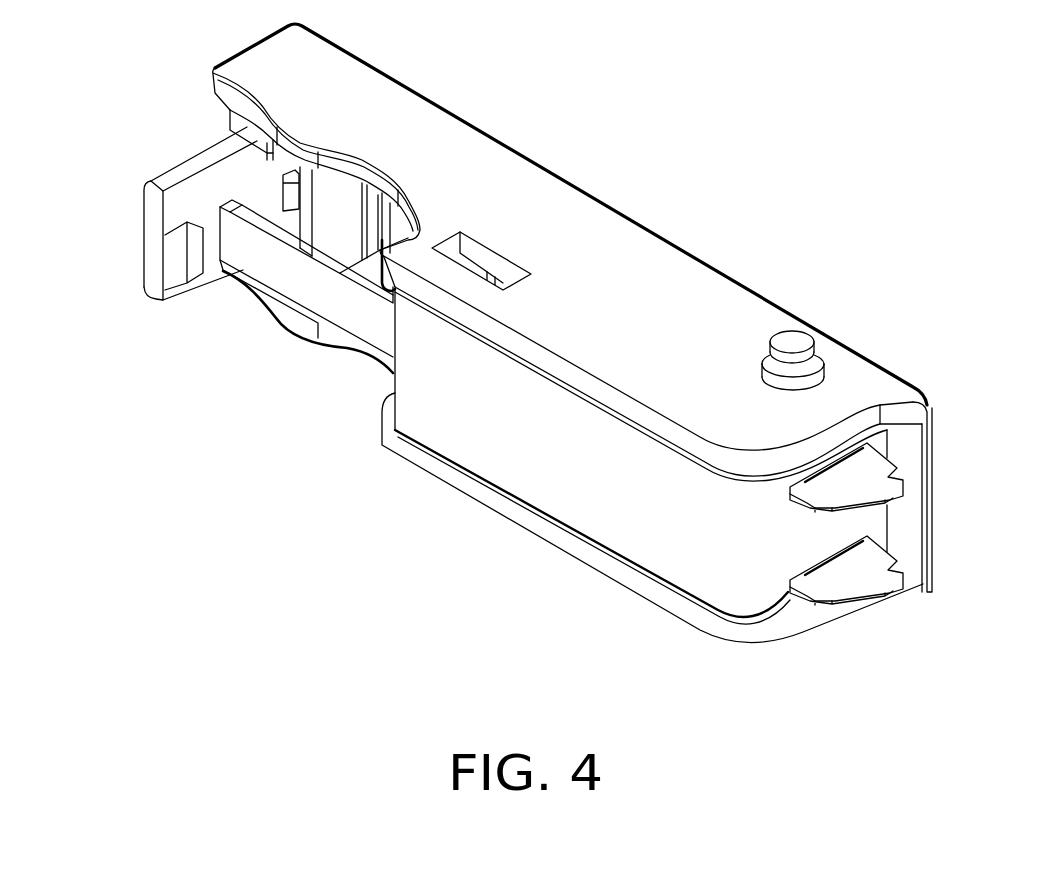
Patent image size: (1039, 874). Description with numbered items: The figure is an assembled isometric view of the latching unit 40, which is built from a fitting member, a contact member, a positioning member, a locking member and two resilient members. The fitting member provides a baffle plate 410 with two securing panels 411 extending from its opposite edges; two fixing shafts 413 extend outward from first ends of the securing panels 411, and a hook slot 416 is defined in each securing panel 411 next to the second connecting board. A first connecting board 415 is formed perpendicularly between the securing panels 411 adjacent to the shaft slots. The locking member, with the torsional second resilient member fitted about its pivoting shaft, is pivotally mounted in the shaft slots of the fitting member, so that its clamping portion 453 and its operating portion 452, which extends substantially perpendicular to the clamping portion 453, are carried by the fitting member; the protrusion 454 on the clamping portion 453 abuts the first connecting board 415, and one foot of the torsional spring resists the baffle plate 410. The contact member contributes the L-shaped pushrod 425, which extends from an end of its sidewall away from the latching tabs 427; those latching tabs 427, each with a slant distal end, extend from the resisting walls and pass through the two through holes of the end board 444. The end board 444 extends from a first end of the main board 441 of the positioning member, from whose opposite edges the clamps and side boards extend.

The latching unit 40 is at (826, 114).
The baffle plate 410 is at (910, 449).
The securing panels 411 is at (636, 274).
The fixing shafts 413 is at (795, 333).
The first connecting board 415 is at (334, 205).
The hook slot 416 is at (487, 258).
The pushrod 425 is at (303, 293).
The latching tabs 427 is at (848, 580).
The main board 441 is at (518, 443).
The end board 444 is at (870, 523).
The operating portion 452 is at (230, 118).
The clamping portion 453 is at (153, 233).
The protrusion 454 is at (296, 168).